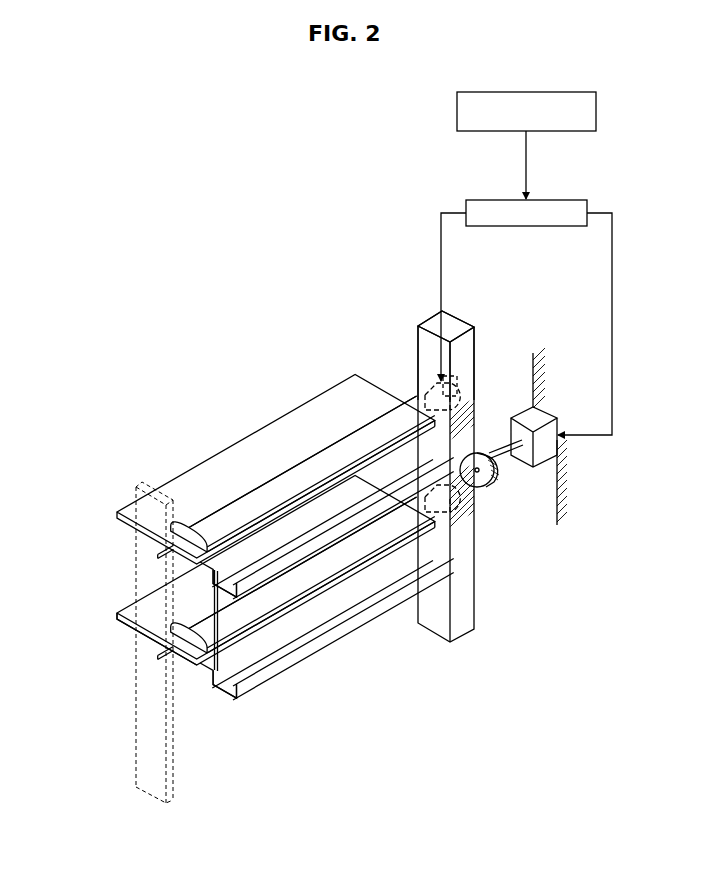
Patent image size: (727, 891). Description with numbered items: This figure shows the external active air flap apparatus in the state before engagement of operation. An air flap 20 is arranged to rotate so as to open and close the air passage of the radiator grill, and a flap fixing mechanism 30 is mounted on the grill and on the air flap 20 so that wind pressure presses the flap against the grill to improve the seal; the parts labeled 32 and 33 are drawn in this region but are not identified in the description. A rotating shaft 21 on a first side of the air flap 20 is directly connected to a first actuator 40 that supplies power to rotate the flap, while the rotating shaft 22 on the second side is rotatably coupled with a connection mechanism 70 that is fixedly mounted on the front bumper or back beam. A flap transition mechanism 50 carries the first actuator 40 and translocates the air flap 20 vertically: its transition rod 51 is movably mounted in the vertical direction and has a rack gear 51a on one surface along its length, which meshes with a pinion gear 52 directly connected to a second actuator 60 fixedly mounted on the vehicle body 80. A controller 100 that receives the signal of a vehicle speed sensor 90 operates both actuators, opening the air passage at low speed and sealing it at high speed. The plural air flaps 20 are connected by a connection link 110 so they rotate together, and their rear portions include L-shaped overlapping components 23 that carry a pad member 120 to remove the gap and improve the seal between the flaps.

The air flap 20 is at (243, 438).
The rotating shaft 21 is at (428, 390).
The rotating shaft 22 is at (158, 555).
The L-shaped overlapping component 23 is at (193, 633).
The flap fixing mechanism 30 is at (298, 460).
The connecting bar 32 is at (213, 592).
The rail top surface 33 is at (238, 518).
The first actuator 40 is at (450, 370).
The flap transition mechanism 50 is at (432, 318).
The transition rod 51 is at (463, 602).
The rack gear 51a is at (462, 505).
The pinion gear 52 is at (478, 448).
The second actuator 60 is at (537, 408).
The connection mechanism 70 is at (135, 582).
The vehicle body 80 is at (562, 487).
The vehicle speed sensor 90 is at (457, 100).
The controller 100 is at (466, 208).
The connection link 110 is at (120, 612).
The pad member 120 is at (295, 553).